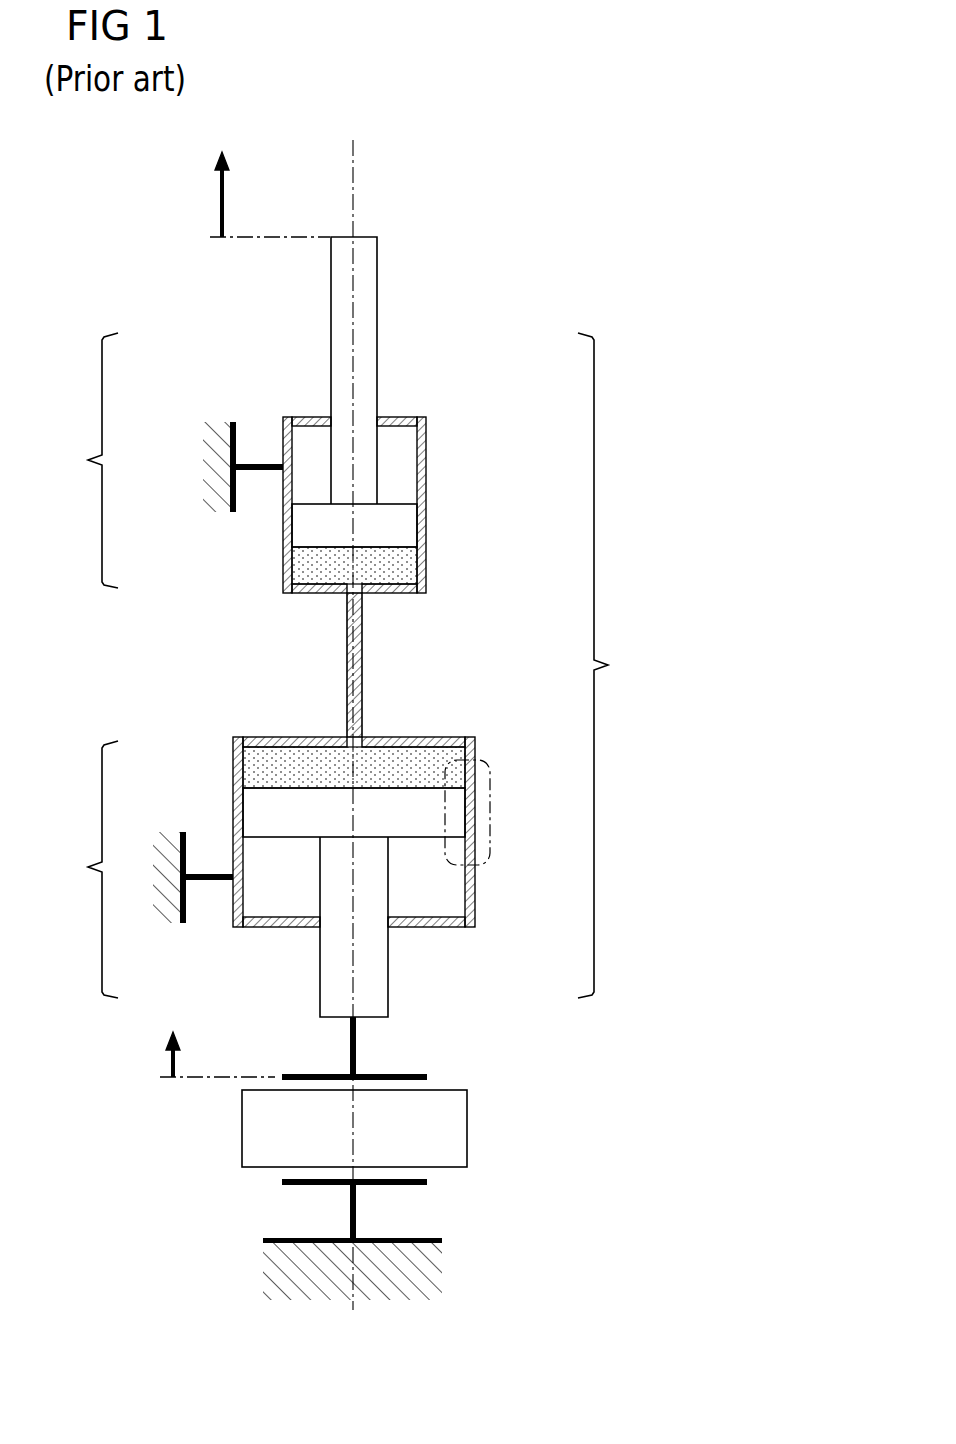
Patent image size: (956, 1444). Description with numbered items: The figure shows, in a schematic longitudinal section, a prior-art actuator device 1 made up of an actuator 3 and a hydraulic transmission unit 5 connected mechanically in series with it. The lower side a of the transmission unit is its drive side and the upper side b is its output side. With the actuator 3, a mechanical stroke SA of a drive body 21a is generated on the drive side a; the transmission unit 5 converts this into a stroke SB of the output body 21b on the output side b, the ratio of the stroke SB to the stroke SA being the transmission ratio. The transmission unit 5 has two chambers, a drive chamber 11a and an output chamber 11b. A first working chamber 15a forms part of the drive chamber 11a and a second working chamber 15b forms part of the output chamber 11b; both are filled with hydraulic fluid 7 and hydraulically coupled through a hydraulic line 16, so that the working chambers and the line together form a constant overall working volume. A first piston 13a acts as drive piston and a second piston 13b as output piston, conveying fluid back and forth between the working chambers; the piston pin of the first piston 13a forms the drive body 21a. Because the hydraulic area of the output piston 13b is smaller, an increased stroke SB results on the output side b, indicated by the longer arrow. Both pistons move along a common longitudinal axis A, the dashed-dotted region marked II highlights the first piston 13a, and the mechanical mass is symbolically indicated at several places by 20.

The actuator device 1 is at (638, 302).
The actuator 3 is at (260, 1133).
The hydraulic transmission unit 5 is at (609, 665).
The hydraulic fluid 7 is at (302, 758).
The drive chamber 11a is at (257, 867).
The output chamber 11b is at (233, 463).
The first piston 13a is at (438, 822).
The second piston 13b is at (398, 523).
The first working chamber 15a is at (248, 762).
The second working chamber 15b is at (300, 573).
The hydraulic line 16 is at (364, 660).
The mechanical mass 20 is at (210, 433).
The drive body 21a is at (388, 990).
The output body 21b is at (377, 268).
The longitudinal axis A is at (358, 147).
The stroke of the drive body SA is at (201, 1054).
The stroke of the output body SB is at (254, 194).
The drive side a is at (507, 1005).
The output side b is at (508, 207).
The detail II is at (490, 778).